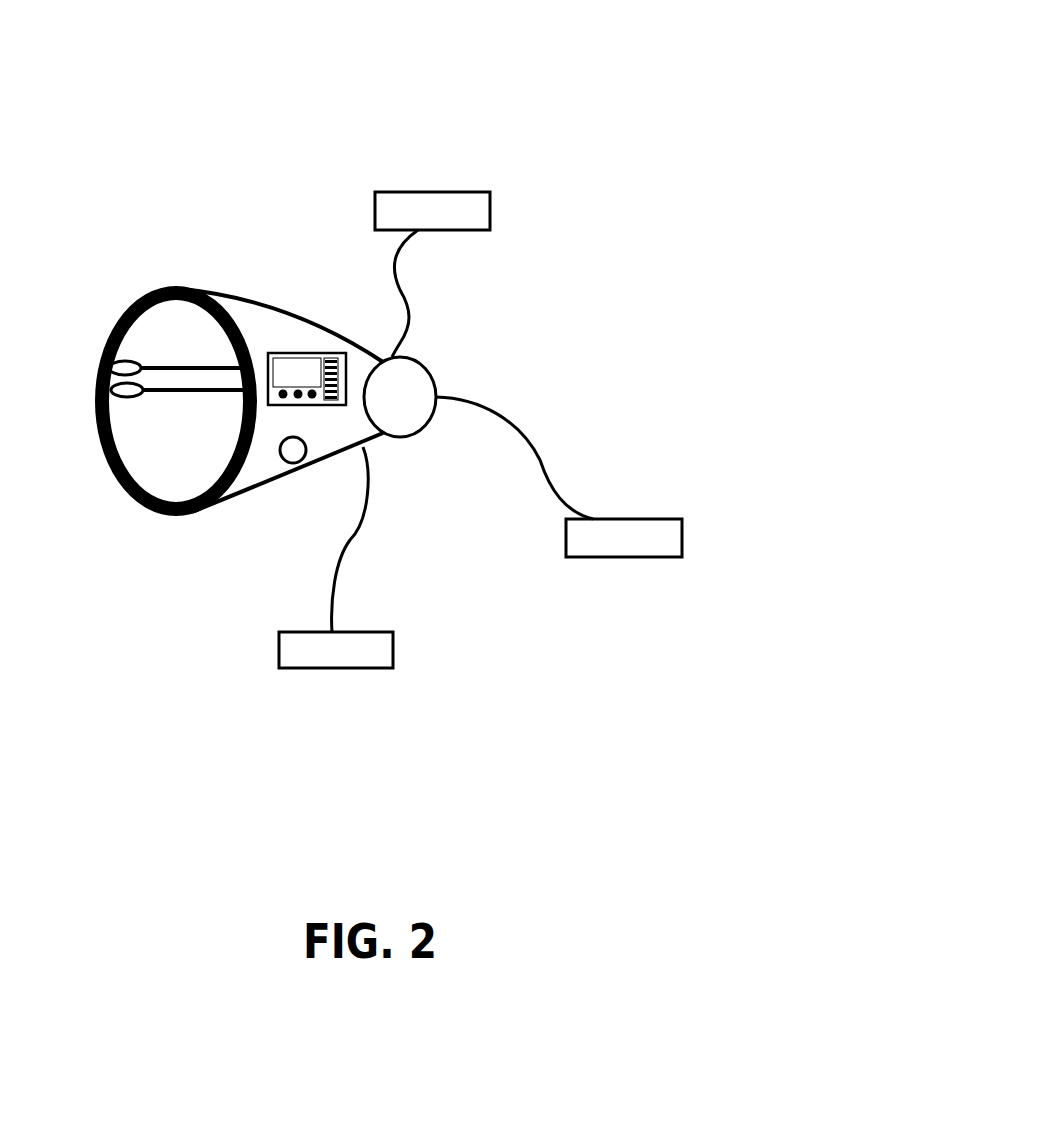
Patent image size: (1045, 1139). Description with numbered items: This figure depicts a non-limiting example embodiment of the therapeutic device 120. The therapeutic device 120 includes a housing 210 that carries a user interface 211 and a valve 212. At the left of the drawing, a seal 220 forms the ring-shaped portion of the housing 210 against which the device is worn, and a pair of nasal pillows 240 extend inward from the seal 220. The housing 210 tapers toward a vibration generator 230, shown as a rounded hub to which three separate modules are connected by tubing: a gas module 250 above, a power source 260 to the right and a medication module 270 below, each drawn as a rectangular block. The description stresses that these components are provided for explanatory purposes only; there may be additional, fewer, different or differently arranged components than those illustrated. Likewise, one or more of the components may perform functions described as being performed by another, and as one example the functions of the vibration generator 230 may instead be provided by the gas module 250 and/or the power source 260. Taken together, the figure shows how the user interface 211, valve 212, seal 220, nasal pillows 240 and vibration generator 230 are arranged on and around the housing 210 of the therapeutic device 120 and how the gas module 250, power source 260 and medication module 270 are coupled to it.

The therapeutic device 120 is at (142, 40).
The housing 210 is at (217, 282).
The user interface 211 is at (309, 350).
The valve 212 is at (284, 468).
The seal 220 is at (115, 320).
The vibration generator 230 is at (437, 368).
The nasal pillows 240 is at (122, 405).
The gas module 250 is at (462, 168).
The power source 260 is at (648, 507).
The medication module 270 is at (380, 618).